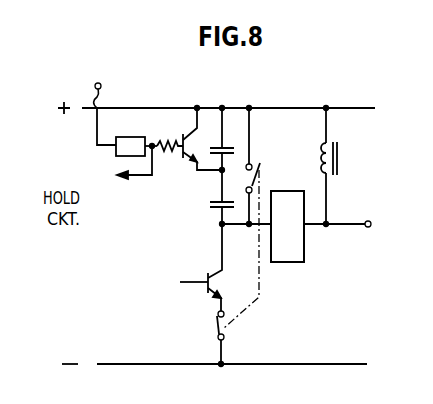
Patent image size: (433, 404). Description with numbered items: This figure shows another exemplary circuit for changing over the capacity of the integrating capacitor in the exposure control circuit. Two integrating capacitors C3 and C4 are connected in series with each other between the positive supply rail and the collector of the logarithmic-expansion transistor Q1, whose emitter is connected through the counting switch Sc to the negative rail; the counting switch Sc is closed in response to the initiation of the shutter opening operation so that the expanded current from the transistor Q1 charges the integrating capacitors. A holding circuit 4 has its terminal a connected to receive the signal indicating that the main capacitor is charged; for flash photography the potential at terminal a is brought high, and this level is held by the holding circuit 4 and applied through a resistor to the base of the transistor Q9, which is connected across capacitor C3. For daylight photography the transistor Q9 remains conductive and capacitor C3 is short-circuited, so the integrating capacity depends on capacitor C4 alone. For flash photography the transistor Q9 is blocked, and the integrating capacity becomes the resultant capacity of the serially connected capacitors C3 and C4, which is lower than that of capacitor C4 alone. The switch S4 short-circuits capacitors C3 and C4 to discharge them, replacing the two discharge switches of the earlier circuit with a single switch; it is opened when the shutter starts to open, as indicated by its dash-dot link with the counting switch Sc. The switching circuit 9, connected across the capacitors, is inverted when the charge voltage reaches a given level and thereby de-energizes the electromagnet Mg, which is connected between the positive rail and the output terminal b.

The terminal a is at (101, 84).
The terminal b is at (370, 221).
The holding circuit 4 is at (115, 157).
The transistor Q9 is at (193, 162).
The integrating capacitor C3 is at (227, 145).
The integrating capacitor C4 is at (212, 215).
The switch S4 is at (260, 163).
The switching circuit 9 is at (300, 191).
The electromagnet Mg is at (337, 144).
The logarithmic-expansion transistor Q1 is at (206, 292).
The counting switch Sc is at (226, 328).